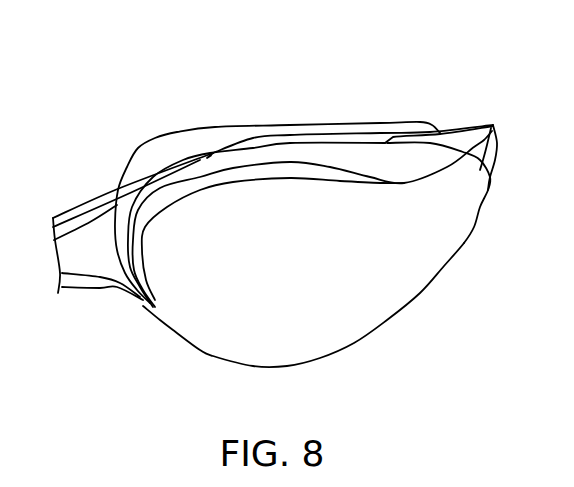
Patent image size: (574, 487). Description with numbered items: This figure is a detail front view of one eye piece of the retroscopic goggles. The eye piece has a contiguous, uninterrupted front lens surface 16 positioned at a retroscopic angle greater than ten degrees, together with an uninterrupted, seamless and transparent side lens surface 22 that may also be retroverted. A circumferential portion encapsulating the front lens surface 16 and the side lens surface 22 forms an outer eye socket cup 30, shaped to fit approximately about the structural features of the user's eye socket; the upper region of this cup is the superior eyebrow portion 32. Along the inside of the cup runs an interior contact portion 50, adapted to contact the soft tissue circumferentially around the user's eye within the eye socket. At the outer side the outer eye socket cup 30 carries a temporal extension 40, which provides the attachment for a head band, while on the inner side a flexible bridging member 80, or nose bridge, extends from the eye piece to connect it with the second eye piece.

The front lens surface 16 is at (235, 341).
The side lens surface 22 is at (470, 205).
The outer eye socket cup 30 is at (140, 70).
The superior eyebrow portion 32 is at (253, 153).
The temporal extension 40 is at (477, 142).
The interior contact portion 50 is at (298, 123).
The flexible bridging member 80 is at (80, 214).